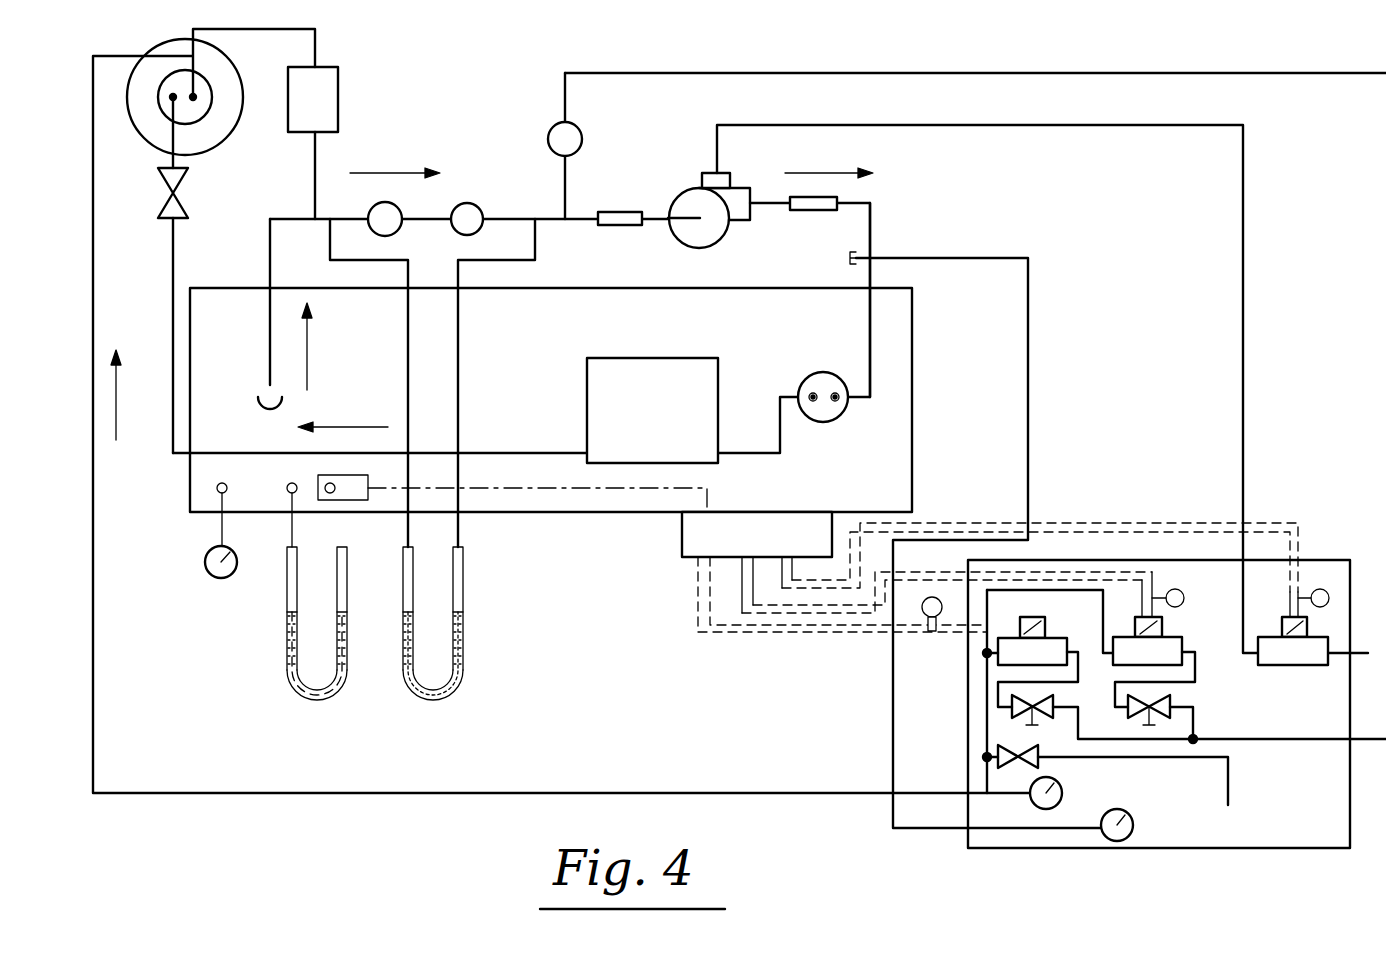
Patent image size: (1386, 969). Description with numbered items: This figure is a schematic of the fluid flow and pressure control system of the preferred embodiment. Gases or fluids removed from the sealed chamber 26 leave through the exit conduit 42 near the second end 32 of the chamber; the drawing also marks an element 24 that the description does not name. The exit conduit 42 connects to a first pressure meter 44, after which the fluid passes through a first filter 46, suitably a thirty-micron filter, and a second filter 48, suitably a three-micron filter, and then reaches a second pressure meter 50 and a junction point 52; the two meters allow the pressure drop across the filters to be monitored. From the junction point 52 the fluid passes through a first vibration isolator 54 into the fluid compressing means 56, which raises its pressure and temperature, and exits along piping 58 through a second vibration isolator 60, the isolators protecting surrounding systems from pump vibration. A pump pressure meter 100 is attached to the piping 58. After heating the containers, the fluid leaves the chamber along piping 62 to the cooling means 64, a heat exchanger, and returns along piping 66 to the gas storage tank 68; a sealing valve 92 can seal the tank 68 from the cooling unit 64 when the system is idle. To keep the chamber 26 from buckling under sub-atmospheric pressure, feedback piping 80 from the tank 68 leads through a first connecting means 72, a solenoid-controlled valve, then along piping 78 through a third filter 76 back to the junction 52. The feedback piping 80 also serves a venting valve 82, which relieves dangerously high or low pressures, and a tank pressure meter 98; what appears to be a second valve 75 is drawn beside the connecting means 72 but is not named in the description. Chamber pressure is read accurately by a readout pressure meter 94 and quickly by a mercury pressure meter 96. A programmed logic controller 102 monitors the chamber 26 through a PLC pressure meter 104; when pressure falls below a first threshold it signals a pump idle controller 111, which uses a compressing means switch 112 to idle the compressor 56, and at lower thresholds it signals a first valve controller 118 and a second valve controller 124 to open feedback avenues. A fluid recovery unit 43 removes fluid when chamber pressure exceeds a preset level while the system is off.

The enclosure 24 is at (915, 432).
The sealed chamber 26 is at (666, 522).
The second end 32 is at (178, 492).
The exit conduit 42 is at (270, 221).
The fluid recovery unit 43 is at (333, 83).
The first pressure meter 44 is at (405, 655).
The first filter 46 is at (397, 231).
The second filter 48 is at (470, 207).
The second pressure meter 50 is at (460, 645).
The junction point 52 is at (567, 220).
The first vibration isolator 54 is at (603, 212).
The fluid compressing means 56 is at (720, 230).
The fluid conducting piping 58 is at (868, 310).
The second vibration isolator 60 is at (797, 211).
The piping to cooling means 62 is at (740, 455).
The cooling means 64 is at (704, 366).
The return piping 66 is at (173, 322).
The gas storage tank 68 is at (215, 63).
The first connecting means 72 is at (1012, 712).
The valve 75 is at (1160, 704).
The third filter 76 is at (558, 127).
The feedback piping to junction 78 is at (1385, 185).
The feedback piping 80 is at (93, 532).
The venting valve 82 is at (1020, 748).
The sealing valve 92 is at (185, 194).
The readout pressure meter 94 is at (213, 577).
The mercury pressure meter 96 is at (288, 665).
The tank pressure meter 98 is at (1062, 786).
The pump pressure meter 100 is at (1135, 822).
The programmed logic controller 102 is at (684, 571).
The PLC pressure meter 104 is at (320, 500).
The pump idle controller 111 is at (1290, 665).
The compressing means switch 112 is at (710, 173).
The first valve controller 118 is at (1000, 662).
The second valve controller 124 is at (1180, 640).